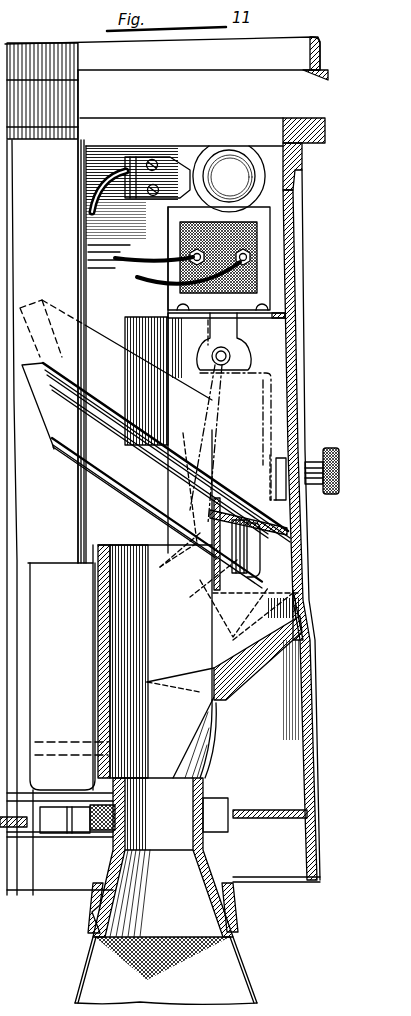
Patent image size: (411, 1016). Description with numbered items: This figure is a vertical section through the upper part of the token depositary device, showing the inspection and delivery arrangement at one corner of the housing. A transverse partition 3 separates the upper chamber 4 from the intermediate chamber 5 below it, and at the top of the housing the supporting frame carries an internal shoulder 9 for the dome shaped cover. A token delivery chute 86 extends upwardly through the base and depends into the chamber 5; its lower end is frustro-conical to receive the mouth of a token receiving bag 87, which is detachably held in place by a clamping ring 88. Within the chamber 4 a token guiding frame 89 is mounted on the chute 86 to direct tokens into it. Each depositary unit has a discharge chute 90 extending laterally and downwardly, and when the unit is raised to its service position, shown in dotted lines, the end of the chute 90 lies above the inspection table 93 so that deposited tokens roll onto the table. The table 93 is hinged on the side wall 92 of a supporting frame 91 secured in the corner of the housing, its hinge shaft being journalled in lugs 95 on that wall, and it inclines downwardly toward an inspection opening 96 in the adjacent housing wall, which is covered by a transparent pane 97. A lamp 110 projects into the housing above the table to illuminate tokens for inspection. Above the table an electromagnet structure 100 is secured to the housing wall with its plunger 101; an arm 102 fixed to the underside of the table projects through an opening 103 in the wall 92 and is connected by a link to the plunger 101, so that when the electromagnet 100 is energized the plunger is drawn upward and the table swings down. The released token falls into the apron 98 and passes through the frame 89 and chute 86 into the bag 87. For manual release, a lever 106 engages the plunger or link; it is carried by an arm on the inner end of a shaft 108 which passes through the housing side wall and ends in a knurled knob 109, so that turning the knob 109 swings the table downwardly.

The partition 3 is at (13, 871).
The upper chamber 4 is at (287, 738).
The intermediate chamber 5 is at (295, 845).
The internal shoulder 9 is at (289, 118).
The token delivery chute 86 is at (213, 870).
The token receiving bag 87 is at (255, 980).
The clamping ring 88 is at (240, 922).
The token guiding frame 89 is at (180, 725).
The discharge chute 90 is at (98, 455).
The supporting frame 91 is at (302, 577).
The side wall 92 is at (140, 332).
The inspection table 93 is at (234, 512).
The lugs 95 is at (257, 556).
The inspection opening 96 is at (296, 385).
The transparent pane 97 is at (280, 412).
The apron 98 is at (257, 687).
The electromagnet structure 100 is at (270, 242).
The plunger 101 is at (270, 327).
The arm 102 is at (202, 553).
The opening 103 is at (232, 582).
The lever 106 is at (219, 392).
The shaft 108 is at (292, 444).
The knurled knob 109 is at (313, 485).
The lamp 110 is at (229, 170).